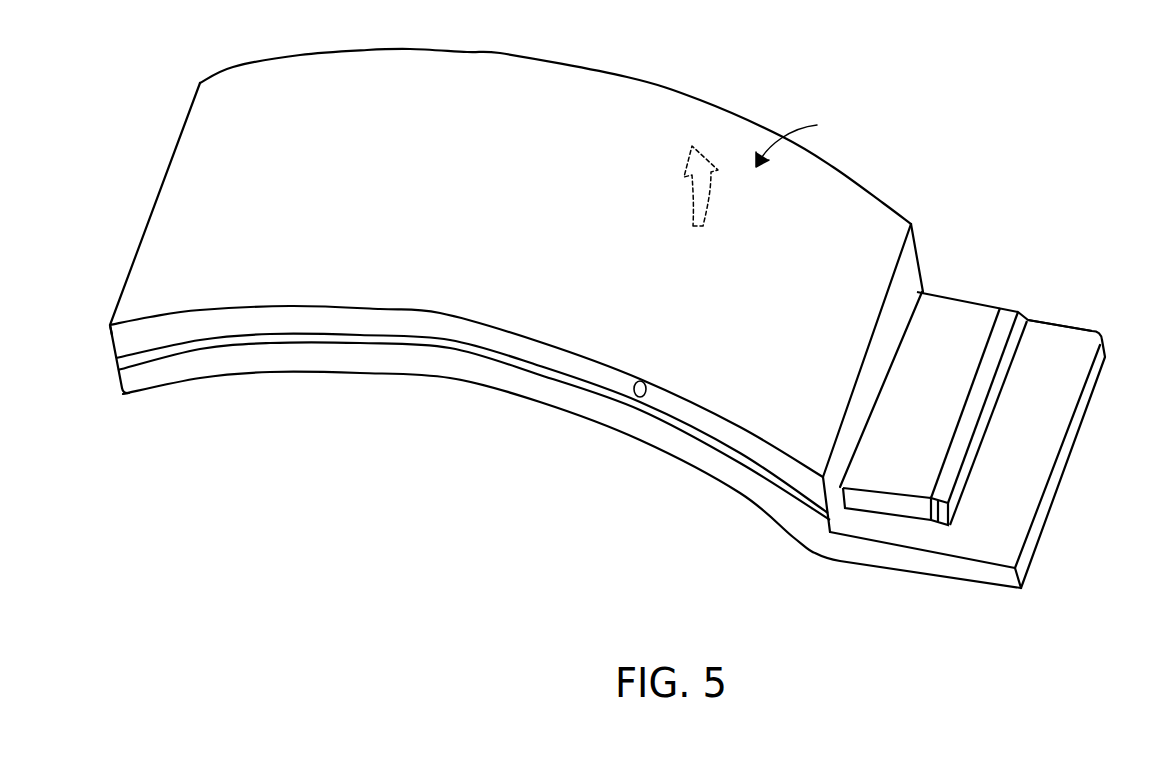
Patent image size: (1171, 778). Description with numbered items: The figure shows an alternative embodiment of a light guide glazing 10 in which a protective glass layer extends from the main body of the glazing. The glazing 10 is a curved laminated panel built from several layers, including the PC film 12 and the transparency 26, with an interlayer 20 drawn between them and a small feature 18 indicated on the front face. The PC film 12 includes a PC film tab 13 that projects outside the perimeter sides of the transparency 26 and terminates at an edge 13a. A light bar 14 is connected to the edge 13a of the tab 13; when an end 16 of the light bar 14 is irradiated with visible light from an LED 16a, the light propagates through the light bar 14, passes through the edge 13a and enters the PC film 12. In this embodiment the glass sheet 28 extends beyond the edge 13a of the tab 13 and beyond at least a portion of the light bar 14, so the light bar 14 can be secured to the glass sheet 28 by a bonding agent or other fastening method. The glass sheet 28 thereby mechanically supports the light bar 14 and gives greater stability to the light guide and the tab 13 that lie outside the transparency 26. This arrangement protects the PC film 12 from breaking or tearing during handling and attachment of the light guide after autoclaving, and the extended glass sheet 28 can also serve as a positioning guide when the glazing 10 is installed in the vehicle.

The glazing 10 is at (632, 104).
The PC film 12 is at (410, 342).
The PC film tab 13 is at (978, 312).
The edge 13a is at (967, 402).
The light bar 14 is at (1027, 341).
The end 16 is at (947, 483).
The LED 16a is at (942, 517).
The sensor opening 18 is at (638, 397).
The interlayer 20 is at (280, 345).
The transparency 26 is at (202, 327).
The glass sheet 28 is at (522, 385).